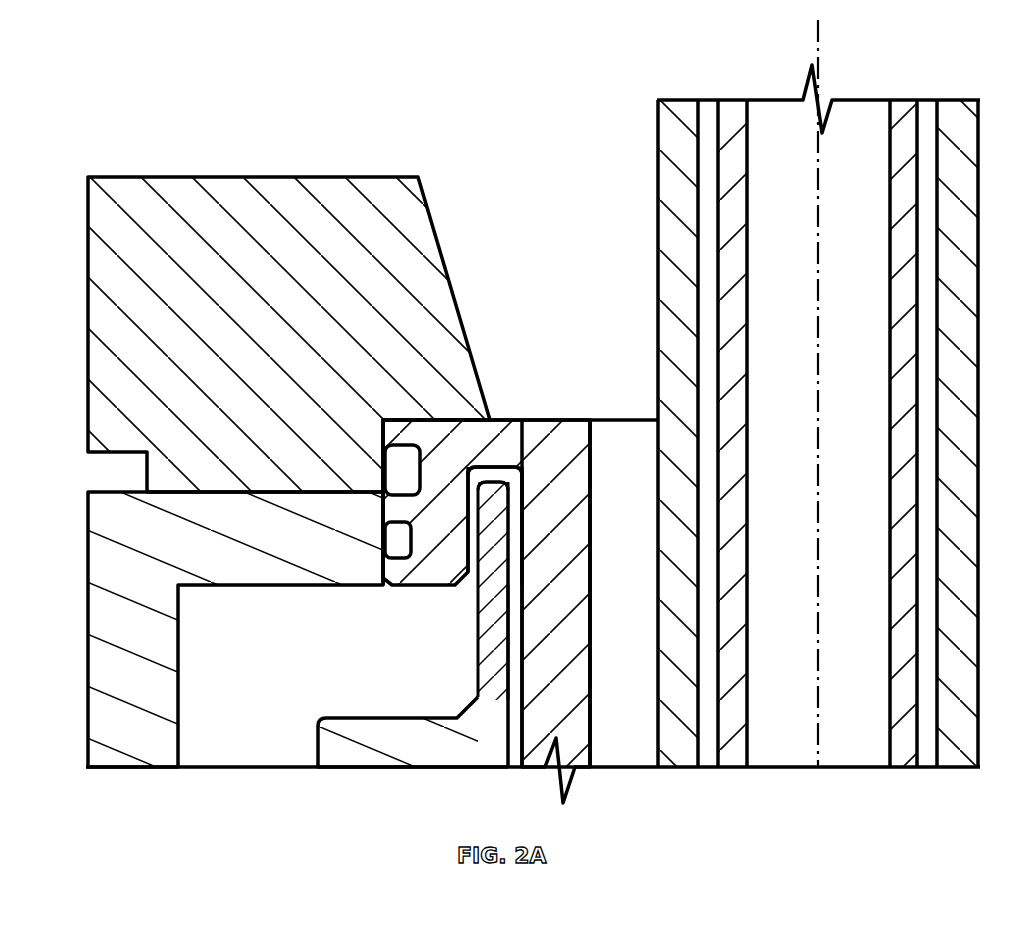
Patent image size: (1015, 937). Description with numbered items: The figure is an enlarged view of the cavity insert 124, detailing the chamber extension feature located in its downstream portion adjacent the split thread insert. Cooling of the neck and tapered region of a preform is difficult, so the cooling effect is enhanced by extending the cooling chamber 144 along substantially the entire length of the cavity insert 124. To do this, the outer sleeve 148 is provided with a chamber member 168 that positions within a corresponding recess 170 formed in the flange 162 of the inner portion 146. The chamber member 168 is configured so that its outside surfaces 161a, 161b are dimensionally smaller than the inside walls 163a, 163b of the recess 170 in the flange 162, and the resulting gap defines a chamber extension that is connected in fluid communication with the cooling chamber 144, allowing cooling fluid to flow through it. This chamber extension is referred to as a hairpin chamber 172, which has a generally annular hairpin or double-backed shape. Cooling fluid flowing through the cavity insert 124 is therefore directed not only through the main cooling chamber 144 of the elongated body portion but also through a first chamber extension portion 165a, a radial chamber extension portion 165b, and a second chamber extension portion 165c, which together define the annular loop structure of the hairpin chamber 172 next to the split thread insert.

The cavity insert 124 is at (226, 822).
The cooling chamber 144 is at (510, 690).
The inner portion 146 is at (597, 713).
The outer sleeve 148 is at (453, 747).
The outside surface 161a is at (392, 568).
The outside surface 161b is at (603, 447).
The flange 162 is at (393, 420).
The inside wall 163a is at (470, 497).
The inside wall 163b is at (517, 553).
The first chamber extension portion 165a is at (520, 500).
The radial chamber extension portion 165b is at (493, 465).
The second chamber extension portion 165c is at (390, 537).
The chamber member 168 is at (493, 573).
The recess 170 is at (505, 467).
The hairpin chamber 172 is at (468, 467).